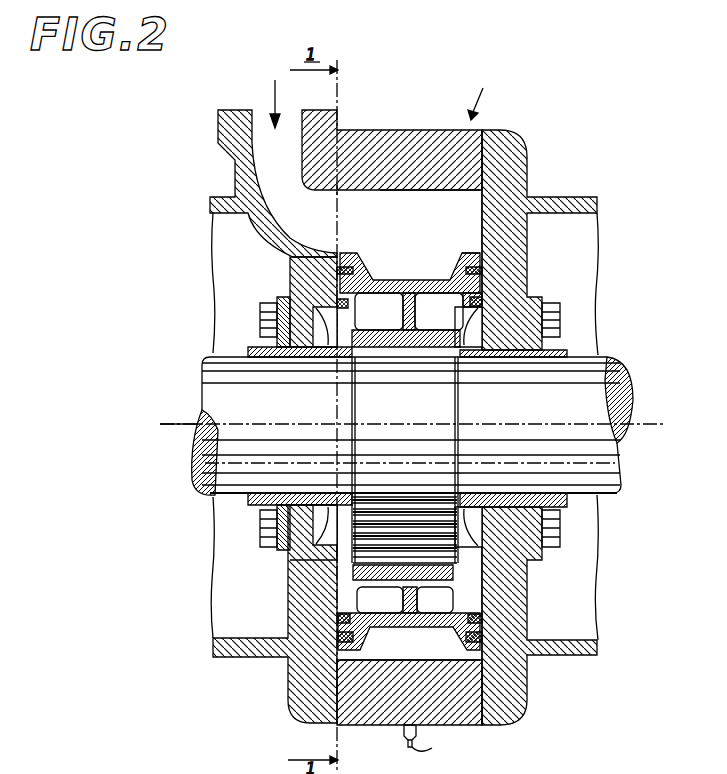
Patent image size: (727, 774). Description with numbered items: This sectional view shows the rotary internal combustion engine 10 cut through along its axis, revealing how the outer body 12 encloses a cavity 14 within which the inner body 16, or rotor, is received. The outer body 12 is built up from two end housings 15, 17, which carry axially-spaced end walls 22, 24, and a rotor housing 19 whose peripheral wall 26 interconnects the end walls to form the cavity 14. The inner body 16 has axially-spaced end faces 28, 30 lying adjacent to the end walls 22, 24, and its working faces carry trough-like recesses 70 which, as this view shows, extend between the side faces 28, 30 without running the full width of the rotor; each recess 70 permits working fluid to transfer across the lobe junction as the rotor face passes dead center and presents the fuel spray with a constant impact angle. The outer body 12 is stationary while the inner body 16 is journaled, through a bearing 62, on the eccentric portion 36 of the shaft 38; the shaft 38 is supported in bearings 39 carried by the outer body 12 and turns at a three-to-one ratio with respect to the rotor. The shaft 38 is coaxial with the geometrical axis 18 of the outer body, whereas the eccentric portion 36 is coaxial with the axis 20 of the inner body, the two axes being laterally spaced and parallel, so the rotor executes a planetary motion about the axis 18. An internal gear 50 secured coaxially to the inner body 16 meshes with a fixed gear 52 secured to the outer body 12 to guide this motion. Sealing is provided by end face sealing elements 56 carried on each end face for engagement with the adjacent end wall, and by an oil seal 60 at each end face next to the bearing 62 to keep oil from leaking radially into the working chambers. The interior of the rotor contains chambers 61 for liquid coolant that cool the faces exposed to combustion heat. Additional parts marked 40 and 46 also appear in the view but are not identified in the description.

The rotary internal combustion engine 10 is at (483, 103).
The outer body 12 is at (385, 131).
The cavity 14 is at (418, 240).
The end housing 15 is at (218, 128).
The inner body 16 is at (403, 314).
The end housing 17 is at (517, 166).
The axis 18 is at (173, 426).
The rotor housing 19 is at (428, 130).
The axis 20 is at (388, 464).
The end wall 22 is at (340, 194).
The end wall 24 is at (481, 221).
The peripheral wall 26 is at (428, 195).
The end face 28 is at (337, 283).
The end face 30 is at (478, 262).
The eccentric portion 36 is at (426, 421).
The shaft 38 is at (205, 382).
The bearings 39 is at (250, 346).
The inlet passage 40 is at (291, 127).
The drain plug 46 is at (420, 731).
The internal gear 50 is at (472, 625).
The fixed gear 52 is at (485, 338).
The end face sealing element 56 is at (338, 270).
The oil seal 60 is at (338, 303).
The chambers 61 is at (405, 291).
The bearing 62 is at (360, 570).
The trough-like recess 70 is at (392, 300).